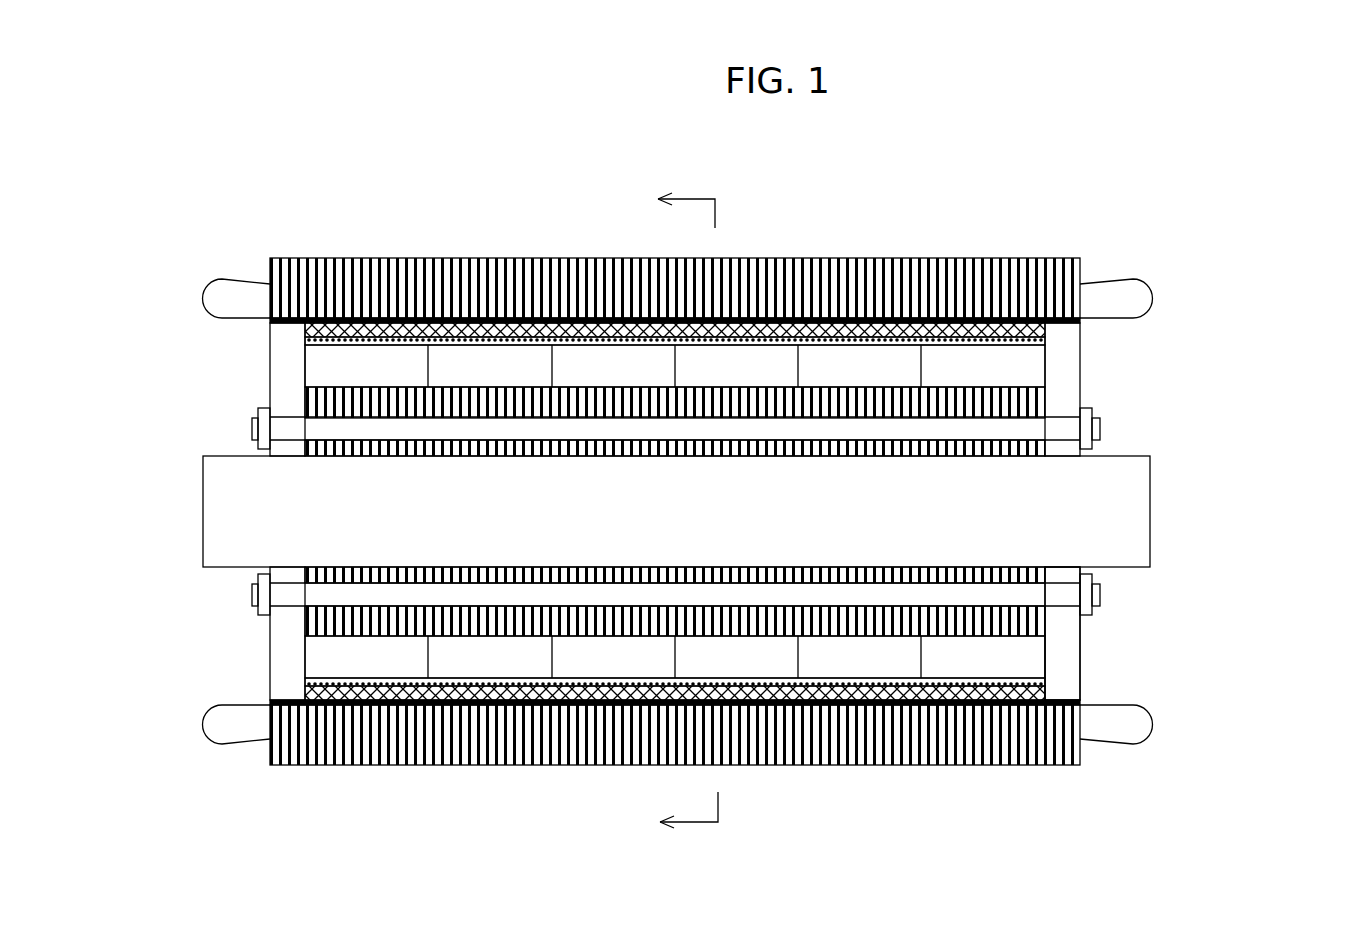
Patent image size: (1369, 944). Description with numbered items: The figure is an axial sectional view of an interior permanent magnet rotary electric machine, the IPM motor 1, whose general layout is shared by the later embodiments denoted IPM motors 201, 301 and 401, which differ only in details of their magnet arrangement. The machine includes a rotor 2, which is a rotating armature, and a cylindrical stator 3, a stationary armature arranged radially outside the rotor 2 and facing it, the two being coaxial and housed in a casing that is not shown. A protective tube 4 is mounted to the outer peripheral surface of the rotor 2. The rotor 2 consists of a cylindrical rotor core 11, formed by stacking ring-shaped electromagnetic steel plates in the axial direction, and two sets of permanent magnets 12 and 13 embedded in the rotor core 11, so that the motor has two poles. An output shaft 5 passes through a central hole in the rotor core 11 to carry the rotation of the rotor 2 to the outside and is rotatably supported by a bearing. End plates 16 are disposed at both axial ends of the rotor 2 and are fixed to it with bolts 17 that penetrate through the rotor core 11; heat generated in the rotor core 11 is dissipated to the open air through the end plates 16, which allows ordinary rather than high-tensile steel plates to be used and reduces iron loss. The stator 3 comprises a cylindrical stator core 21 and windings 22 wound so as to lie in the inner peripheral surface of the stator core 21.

The IPM motor 1 is at (775, 479).
The IPM motor 201 is at (775, 479).
The IPM motor 301 is at (775, 479).
The IPM motor 401 is at (1110, 185).
The rotor 2 is at (1097, 642).
The stator 3 is at (1092, 763).
The protective tube 4 is at (427, 347).
The output shaft 5 is at (1135, 507).
The rotor core 11 is at (317, 622).
The permanent magnets 12 is at (878, 365).
The permanent magnets 13 is at (958, 672).
The end plates 16 is at (297, 362).
The bolts 17 is at (1100, 425).
The stator core 21 is at (977, 272).
The windings 22 is at (1137, 293).